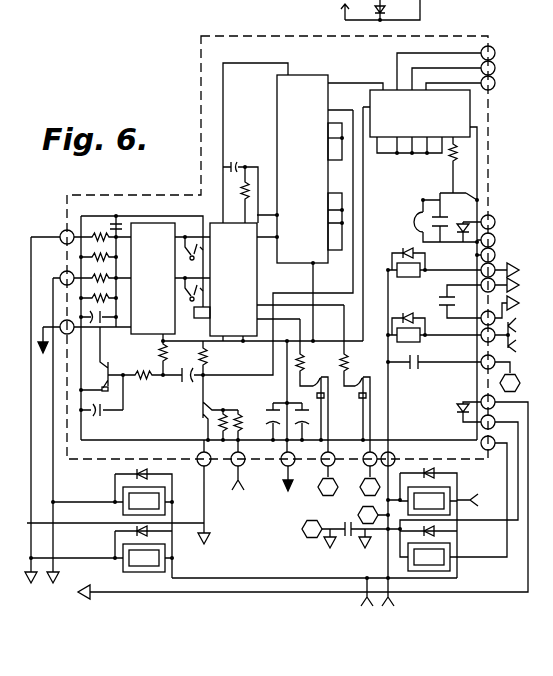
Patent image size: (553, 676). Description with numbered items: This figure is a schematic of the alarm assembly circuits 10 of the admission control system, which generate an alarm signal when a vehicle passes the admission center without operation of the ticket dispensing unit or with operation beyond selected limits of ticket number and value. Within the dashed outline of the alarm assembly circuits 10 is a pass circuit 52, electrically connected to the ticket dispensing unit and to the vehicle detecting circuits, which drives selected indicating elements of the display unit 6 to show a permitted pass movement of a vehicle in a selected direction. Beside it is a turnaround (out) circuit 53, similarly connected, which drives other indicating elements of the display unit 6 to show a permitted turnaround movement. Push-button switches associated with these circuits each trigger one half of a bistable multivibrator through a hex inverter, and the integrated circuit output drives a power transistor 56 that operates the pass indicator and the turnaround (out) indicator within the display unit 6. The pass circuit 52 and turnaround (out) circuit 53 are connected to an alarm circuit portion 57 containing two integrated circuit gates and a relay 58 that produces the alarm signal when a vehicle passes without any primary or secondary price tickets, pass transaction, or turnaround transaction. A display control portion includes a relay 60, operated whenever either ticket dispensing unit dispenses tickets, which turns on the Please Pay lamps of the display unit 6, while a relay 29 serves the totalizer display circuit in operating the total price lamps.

The alarm assembly circuits 10 is at (235, 31).
The alarm circuit portion 57 is at (316, 77).
The pass circuit 52 is at (252, 222).
The turnaround (out) circuit 53 is at (150, 336).
The power transistor 56 is at (313, 384).
The relay 58 is at (400, 253).
The relay 60 is at (401, 317).
The relay 29 is at (405, 343).
The display unit 6 is at (186, 558).